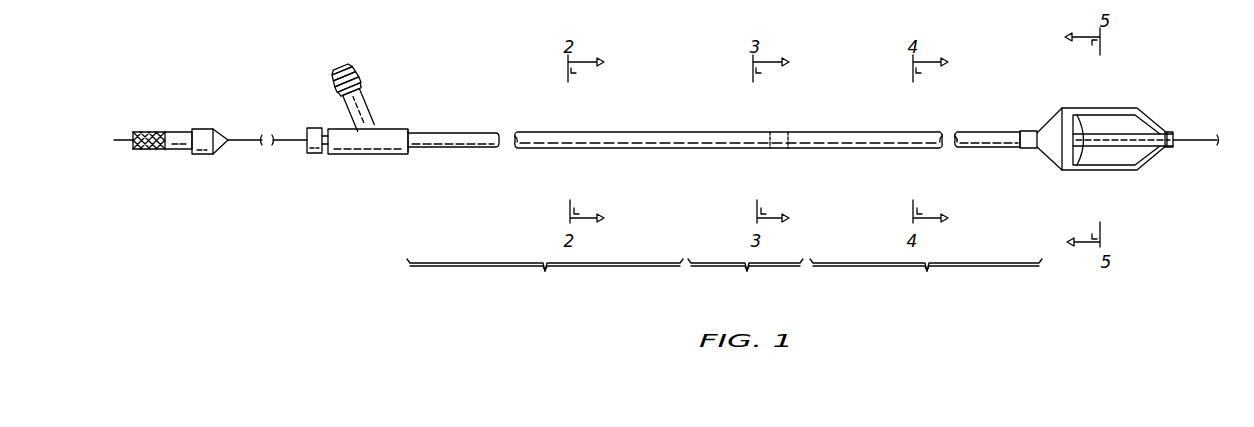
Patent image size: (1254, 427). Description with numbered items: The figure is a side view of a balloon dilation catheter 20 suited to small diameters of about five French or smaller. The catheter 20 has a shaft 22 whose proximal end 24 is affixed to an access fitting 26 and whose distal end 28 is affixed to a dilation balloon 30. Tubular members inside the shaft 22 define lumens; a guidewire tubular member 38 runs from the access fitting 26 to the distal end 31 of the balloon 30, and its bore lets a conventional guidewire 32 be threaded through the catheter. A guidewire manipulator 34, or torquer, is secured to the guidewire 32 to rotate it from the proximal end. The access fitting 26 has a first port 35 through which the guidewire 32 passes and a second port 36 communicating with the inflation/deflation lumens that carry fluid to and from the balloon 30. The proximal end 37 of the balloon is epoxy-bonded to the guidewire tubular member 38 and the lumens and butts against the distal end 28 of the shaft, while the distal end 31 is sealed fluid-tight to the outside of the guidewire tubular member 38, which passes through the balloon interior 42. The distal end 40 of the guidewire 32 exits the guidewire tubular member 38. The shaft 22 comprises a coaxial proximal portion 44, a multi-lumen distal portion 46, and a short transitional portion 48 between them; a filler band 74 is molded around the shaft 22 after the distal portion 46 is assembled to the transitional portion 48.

The catheter 20 is at (628, 118).
The shaft 22 is at (450, 148).
The proximal end 24 is at (417, 123).
The access fitting 26 is at (368, 155).
The distal end 28 is at (1017, 120).
The dilation balloon 30 is at (1127, 170).
The distal end of the balloon 31 is at (1165, 130).
The guidewire 32 is at (250, 138).
The guidewire manipulator 34 is at (178, 130).
The first port 35 is at (315, 128).
The second port 36 is at (337, 72).
The proximal end of the balloon 37 is at (1028, 148).
The guidewire tubular member 38 is at (1100, 130).
The distal end of the guidewire 40 is at (1195, 143).
The balloon interior 42 is at (1085, 155).
The proximal portion 44 is at (545, 280).
The distal portion 46 is at (926, 280).
The transitional portion 48 is at (745, 280).
The filler band 74 is at (778, 132).